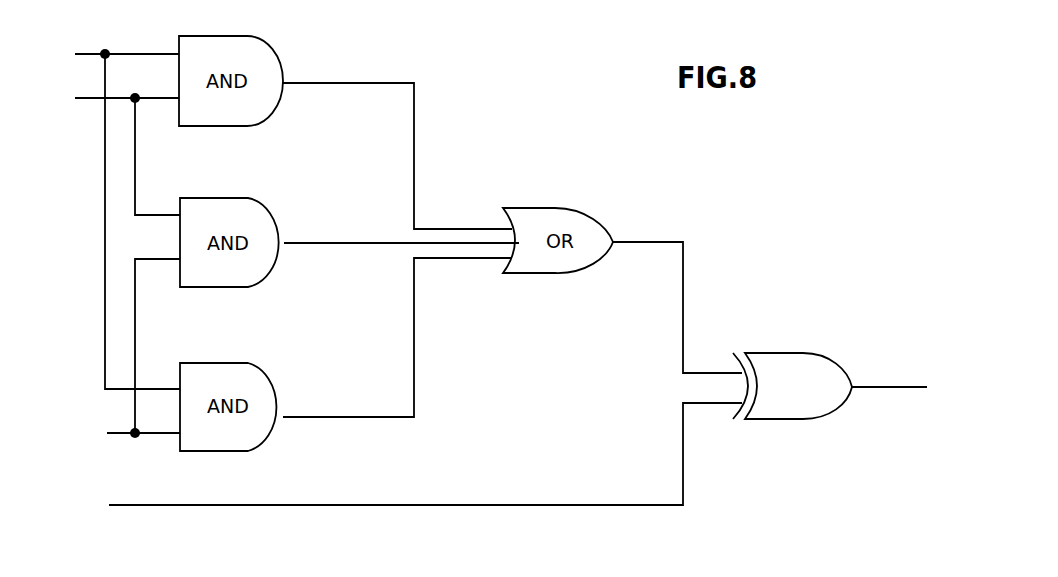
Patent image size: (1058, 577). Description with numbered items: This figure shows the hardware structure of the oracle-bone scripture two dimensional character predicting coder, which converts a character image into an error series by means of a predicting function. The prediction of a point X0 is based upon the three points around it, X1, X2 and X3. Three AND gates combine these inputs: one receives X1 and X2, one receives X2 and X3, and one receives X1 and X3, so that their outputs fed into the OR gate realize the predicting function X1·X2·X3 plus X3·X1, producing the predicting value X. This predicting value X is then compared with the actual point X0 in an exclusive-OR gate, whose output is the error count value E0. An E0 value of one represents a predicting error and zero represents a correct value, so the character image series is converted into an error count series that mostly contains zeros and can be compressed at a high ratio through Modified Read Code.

The neighboring point X1 is at (109, 219).
The neighboring point X2 is at (109, 158).
The neighboring point X3 is at (123, 344).
The predicted point X0 is at (407, 459).
The predicting value X̂0 X is at (676, 276).
The error count value E0 is at (889, 368).